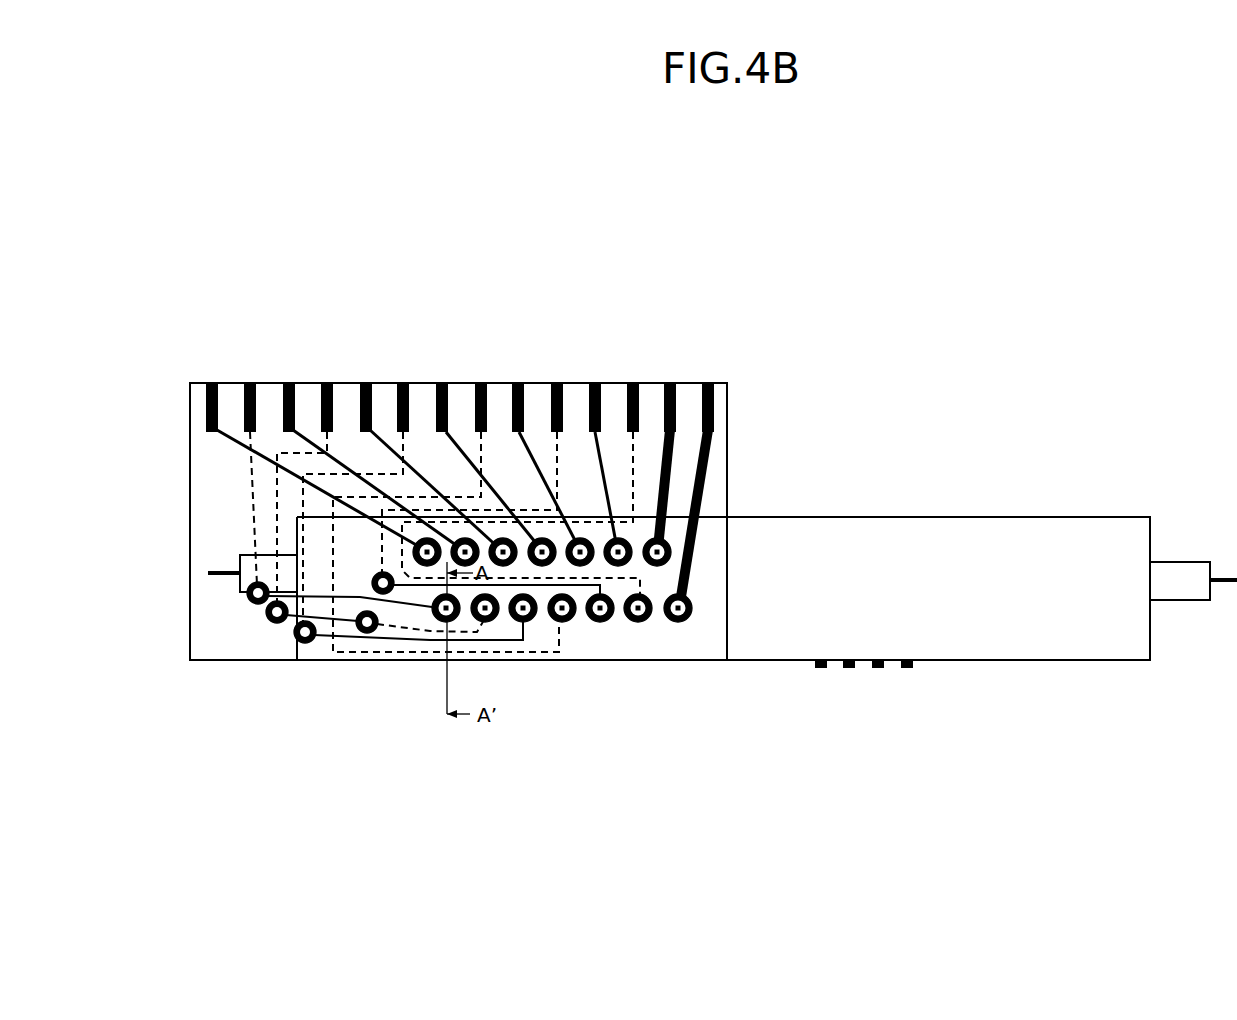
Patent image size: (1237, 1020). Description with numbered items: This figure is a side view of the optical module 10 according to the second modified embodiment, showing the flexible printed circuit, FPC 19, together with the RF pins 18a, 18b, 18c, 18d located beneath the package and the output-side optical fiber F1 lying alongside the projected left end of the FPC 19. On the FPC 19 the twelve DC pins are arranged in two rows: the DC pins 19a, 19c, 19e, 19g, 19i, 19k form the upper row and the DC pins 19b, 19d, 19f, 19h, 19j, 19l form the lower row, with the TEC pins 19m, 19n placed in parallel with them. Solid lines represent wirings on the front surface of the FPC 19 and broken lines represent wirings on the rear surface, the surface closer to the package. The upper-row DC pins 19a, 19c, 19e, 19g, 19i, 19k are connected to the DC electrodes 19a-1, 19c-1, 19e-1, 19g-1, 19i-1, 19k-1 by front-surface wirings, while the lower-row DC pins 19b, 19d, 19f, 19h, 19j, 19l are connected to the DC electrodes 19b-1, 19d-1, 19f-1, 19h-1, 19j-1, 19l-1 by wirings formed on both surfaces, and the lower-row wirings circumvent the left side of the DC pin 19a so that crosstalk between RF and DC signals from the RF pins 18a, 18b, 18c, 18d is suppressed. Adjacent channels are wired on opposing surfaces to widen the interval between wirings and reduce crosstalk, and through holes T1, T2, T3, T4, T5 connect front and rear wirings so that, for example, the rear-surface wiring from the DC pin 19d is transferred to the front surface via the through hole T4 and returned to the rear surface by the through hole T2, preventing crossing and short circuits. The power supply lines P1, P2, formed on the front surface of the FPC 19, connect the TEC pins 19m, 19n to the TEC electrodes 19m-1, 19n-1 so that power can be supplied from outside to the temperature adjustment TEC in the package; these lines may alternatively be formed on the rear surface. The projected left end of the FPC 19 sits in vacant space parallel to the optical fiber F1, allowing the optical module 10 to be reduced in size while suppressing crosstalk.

The optical module 10 is at (1103, 660).
The RF pin 18a is at (824, 668).
The RF pin 18b is at (851, 668).
The RF pin 18c is at (880, 668).
The RF pin 18d is at (909, 668).
The FPC 19 is at (720, 417).
The DC electrode 19a-1 is at (221, 383).
The DC electrode 19b-1 is at (259, 383).
The DC electrode 19c-1 is at (297, 383).
The DC electrode 19d-1 is at (336, 383).
The DC electrode 19e-1 is at (374, 383).
The DC electrode 19f-1 is at (412, 383).
The DC electrode 19g-1 is at (452, 383).
The DC electrode 19h-1 is at (491, 383).
The DC electrode 19i-1 is at (535, 383).
The DC electrode 19j-1 is at (572, 383).
The DC electrode 19k-1 is at (607, 383).
The DC electrode 19l-1 is at (646, 383).
The TEC electrode 19m-1 is at (683, 383).
The TEC electrode 19n-1 is at (720, 383).
The DC pin 19a is at (425, 566).
The DC pin 19b is at (444, 622).
The DC pin 19c is at (465, 538).
The DC pin 19d is at (487, 622).
The DC pin 19e is at (503, 538).
The DC pin 19f is at (521, 622).
The DC pin 19g is at (541, 566).
The DC pin 19h is at (563, 622).
The DC pin 19i is at (582, 566).
The DC pin 19j is at (602, 622).
The DC pin 19k is at (620, 566).
The DC pin 19l is at (640, 622).
The TEC pin 19m is at (659, 566).
The TEC pin 19n is at (680, 622).
The power supply line P1 is at (667, 460).
The power supply line P2 is at (703, 495).
The output-side optical fiber F1 is at (208, 568).
The through hole T1 is at (255, 604).
The through hole T2 is at (275, 623).
The through hole T3 is at (307, 643).
The through hole T4 is at (365, 633).
The through hole T5 is at (383, 594).